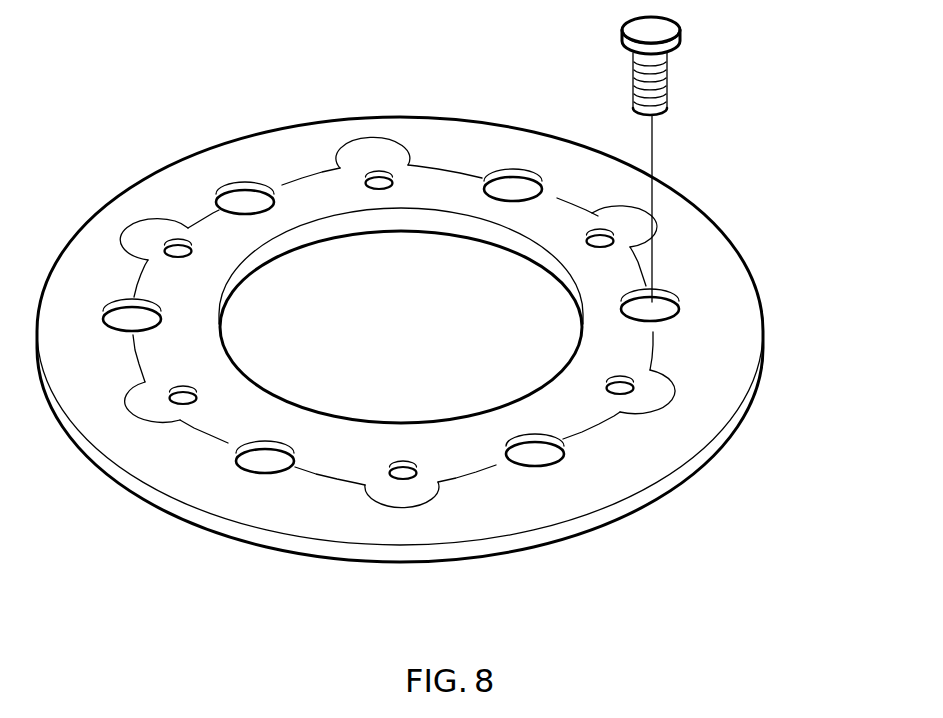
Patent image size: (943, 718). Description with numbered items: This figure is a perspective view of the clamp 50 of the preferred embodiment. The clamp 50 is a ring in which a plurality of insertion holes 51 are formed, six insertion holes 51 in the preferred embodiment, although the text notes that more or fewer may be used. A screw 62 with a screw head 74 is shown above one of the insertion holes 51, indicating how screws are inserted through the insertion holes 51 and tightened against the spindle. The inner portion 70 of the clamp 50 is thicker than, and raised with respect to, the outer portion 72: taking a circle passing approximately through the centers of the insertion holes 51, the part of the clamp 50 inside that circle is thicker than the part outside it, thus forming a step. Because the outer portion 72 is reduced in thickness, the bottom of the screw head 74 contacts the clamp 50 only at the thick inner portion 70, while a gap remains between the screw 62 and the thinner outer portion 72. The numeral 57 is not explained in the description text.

The clamp 50 is at (419, 316).
The insertion hole 51 is at (540, 453).
The mounting hole 57 is at (660, 306).
The screw 62 is at (668, 90).
The inner portion 70 is at (322, 236).
The outer portion 72 is at (707, 218).
The screw head 74 is at (625, 50).